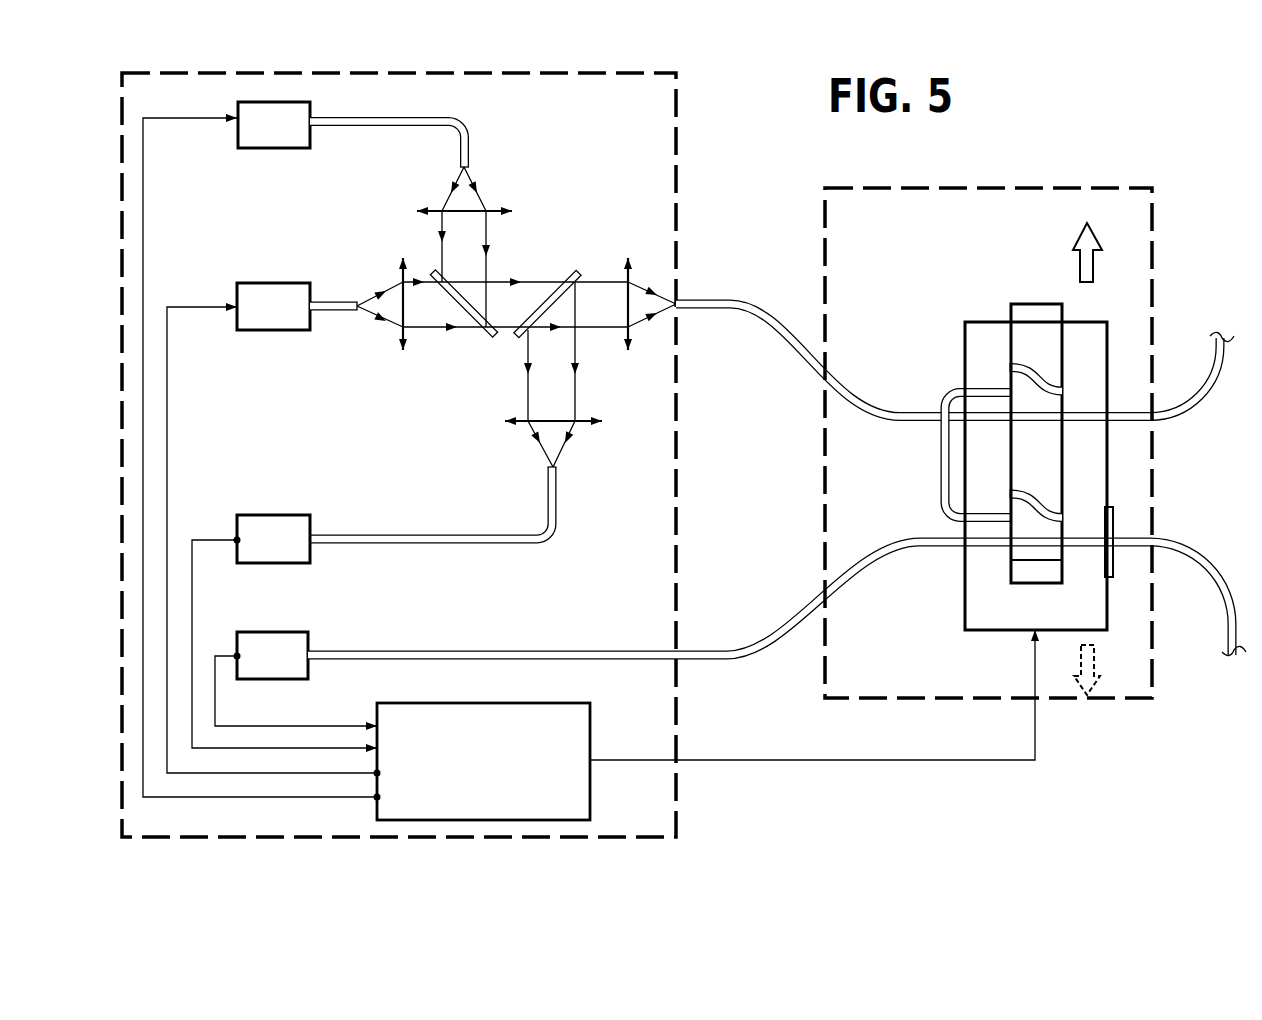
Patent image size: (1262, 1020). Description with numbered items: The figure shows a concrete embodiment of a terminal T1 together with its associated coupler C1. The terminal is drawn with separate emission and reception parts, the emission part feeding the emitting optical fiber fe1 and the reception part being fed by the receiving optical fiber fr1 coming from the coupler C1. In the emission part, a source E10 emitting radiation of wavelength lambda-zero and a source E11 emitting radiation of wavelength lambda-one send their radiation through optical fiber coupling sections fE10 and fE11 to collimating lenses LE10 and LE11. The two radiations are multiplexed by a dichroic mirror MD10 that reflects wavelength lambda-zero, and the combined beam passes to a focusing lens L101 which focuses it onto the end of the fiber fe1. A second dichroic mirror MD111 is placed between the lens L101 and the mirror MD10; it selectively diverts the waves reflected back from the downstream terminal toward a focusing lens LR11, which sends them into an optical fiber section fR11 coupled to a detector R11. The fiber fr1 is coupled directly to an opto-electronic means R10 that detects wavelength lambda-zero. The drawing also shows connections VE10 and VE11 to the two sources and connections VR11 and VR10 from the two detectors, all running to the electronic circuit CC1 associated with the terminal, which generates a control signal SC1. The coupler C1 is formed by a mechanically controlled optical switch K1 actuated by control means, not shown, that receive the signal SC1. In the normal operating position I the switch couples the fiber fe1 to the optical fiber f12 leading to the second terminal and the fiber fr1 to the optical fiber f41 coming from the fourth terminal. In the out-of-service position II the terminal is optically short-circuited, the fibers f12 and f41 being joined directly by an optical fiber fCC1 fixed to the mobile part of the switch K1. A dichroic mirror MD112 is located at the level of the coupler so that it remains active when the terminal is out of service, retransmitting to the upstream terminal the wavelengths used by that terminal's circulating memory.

The terminal T1 is at (676, 118).
The source E10 is at (293, 150).
The control line of light source E10 VE10 is at (214, 120).
The optical fiber coupling section fE10 is at (410, 121).
The collimating lens LE10 is at (438, 197).
The source E11 is at (292, 278).
The control line of light source E11 VE11 is at (224, 305).
The optical fiber coupling section fE11 is at (330, 300).
The collimating lens LE11 is at (396, 327).
The dichroic mirror MD10 is at (478, 340).
The dichroic mirror MD111 is at (552, 282).
The focusing lens L101 is at (623, 329).
The focusing lens LR11 is at (572, 425).
The optical fiber section fR11 is at (415, 520).
The detector R11 is at (285, 514).
The signal line of receiver R11 VR11 is at (230, 537).
The opto-electronic means R10 is at (292, 628).
The signal line of receiver R10 VR10 is at (215, 690).
The receiving optical fiber fr1 is at (458, 640).
The electronic circuit CC1 is at (612, 729).
The control signal SC1 is at (793, 762).
The emitting optical fiber fe1 is at (766, 301).
The optical fiber fCC1 is at (940, 486).
The optical fiber f12 is at (1188, 379).
The optical fiber f41 is at (1224, 598).
The mechanically controlled optical switch K1 is at (964, 602).
The dichroic mirror MD112 is at (1113, 523).
The normal operating position I is at (1080, 264).
The out of service position II is at (1097, 670).
The coupler C1 is at (876, 186).